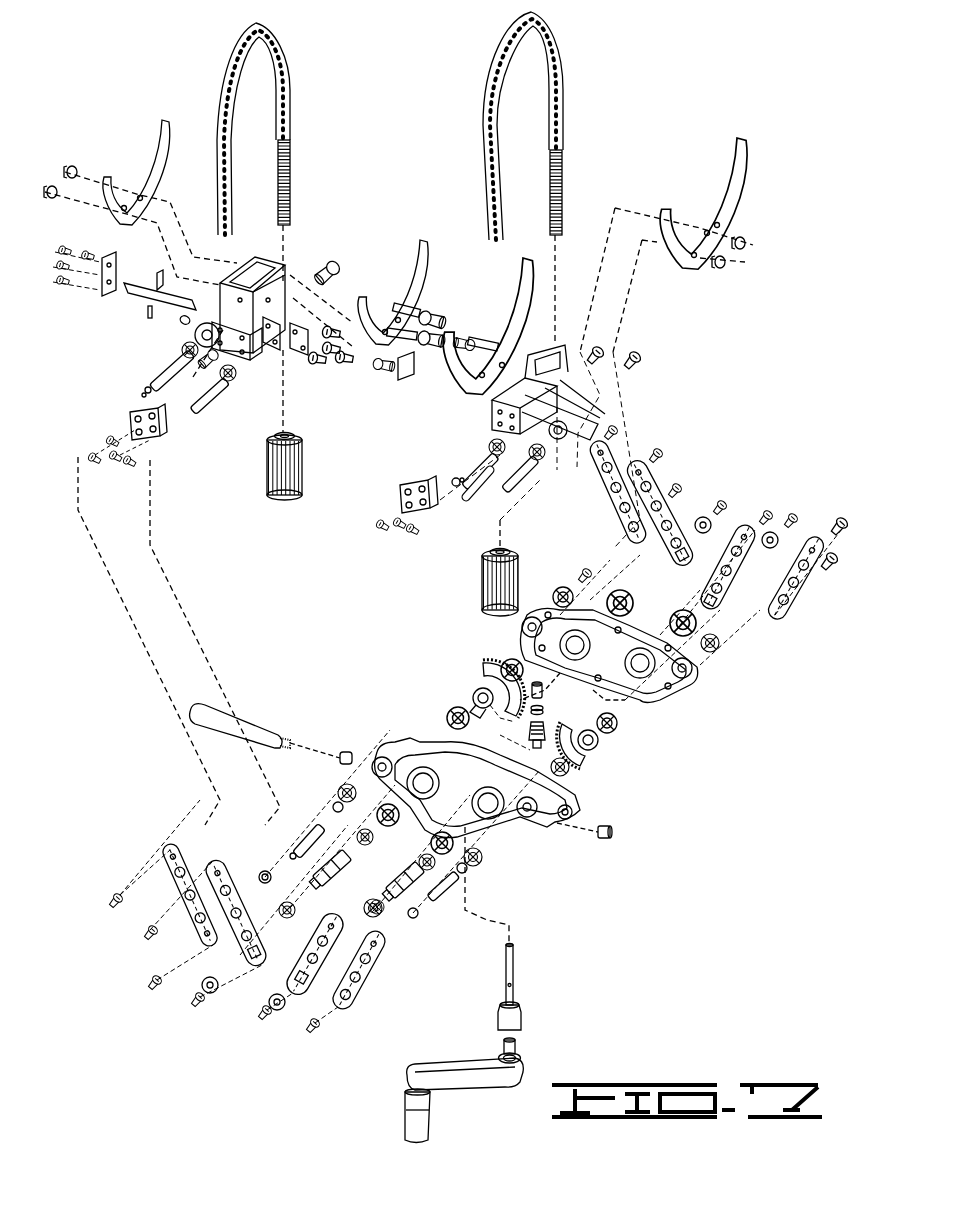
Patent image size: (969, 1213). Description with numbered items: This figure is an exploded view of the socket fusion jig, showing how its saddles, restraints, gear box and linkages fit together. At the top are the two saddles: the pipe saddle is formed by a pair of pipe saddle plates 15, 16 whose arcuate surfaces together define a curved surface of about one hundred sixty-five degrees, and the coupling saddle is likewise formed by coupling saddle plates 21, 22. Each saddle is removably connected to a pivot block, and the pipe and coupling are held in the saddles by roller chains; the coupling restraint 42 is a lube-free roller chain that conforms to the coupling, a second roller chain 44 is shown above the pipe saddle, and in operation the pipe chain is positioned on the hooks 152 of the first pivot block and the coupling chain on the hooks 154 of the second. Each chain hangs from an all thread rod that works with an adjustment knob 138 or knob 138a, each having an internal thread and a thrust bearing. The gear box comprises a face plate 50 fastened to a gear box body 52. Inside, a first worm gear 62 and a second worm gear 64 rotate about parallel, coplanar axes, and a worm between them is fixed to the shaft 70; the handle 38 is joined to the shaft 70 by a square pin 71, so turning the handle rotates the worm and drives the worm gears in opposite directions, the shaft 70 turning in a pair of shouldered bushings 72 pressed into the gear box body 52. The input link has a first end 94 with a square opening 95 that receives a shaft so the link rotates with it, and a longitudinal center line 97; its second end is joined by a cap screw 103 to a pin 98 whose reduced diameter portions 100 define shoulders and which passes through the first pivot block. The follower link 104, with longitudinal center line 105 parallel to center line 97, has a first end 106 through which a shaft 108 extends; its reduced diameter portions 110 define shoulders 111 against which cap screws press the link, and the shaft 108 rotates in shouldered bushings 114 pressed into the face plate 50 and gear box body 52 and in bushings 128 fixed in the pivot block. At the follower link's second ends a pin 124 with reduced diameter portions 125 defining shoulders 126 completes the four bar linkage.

The pipe saddle plate 15 is at (422, 248).
The pipe saddle plate 16 is at (157, 133).
The coupling saddle plate 21 is at (522, 290).
The coupling saddle plate 22 is at (754, 165).
The handle 38 is at (405, 1122).
The coupling restraint 42 is at (585, 62).
The chain 44 is at (250, 40).
The face plate 50 is at (700, 668).
The gear box body 52 is at (560, 805).
The first worm gear 62 is at (478, 690).
The second worm gear 64 is at (617, 740).
The shaft 70 is at (515, 970).
The square pin 71 is at (518, 1050).
The shouldered bushing 72 is at (546, 684).
The first end 94 is at (285, 980).
The square opening 95 is at (670, 565).
The longitudinal center line 97 is at (636, 462).
The pin 98 is at (470, 462).
The reduced diameter portion 100 is at (462, 483).
The cap screw 103 is at (812, 535).
The follower link 104 is at (608, 500).
The longitudinal center line 105 is at (598, 440).
The first end 106 is at (372, 982).
The shaft 108 is at (308, 828).
The reduced diameter portion 110 is at (455, 480).
The shoulder 111 is at (292, 853).
The bushing 114 is at (345, 785).
The pin 124 is at (160, 370).
The reduced diameter portion 125 is at (145, 388).
The shoulder 126 is at (141, 396).
The bushing 128 is at (322, 240).
The adjustment knob 138 is at (265, 476).
The knob 138a is at (478, 585).
The hooks 152 is at (168, 428).
The hooks 154 is at (400, 495).